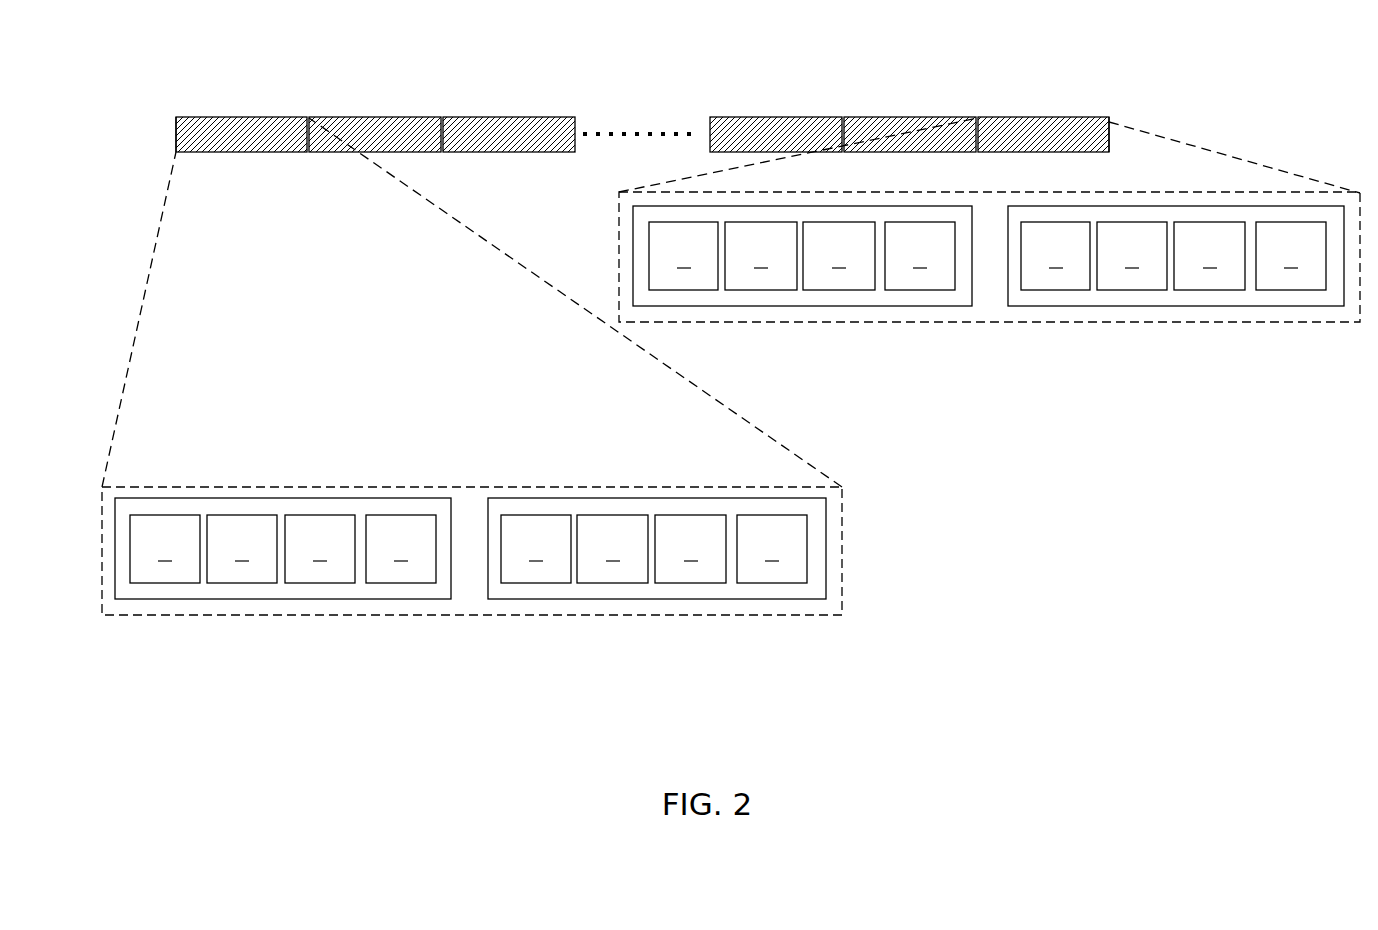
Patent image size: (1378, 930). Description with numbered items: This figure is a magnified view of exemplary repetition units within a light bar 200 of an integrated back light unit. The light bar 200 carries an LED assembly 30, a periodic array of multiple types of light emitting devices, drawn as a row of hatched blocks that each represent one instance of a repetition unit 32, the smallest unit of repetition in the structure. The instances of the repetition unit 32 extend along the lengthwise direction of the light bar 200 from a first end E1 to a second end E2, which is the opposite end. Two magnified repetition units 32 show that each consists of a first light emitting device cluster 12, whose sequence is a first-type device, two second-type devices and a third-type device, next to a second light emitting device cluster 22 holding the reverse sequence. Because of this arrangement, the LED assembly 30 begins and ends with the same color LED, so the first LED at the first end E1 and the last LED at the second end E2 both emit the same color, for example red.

The LED assembly 30 is at (731, 329).
The light bar 200 is at (1107, 100).
The repetition unit 32 is at (731, 366).
The first light emitting device cluster 12 is at (913, 306).
The second light emitting device cluster 22 is at (1168, 306).
The first end E1 is at (176, 130).
The second end E2 is at (1110, 128).